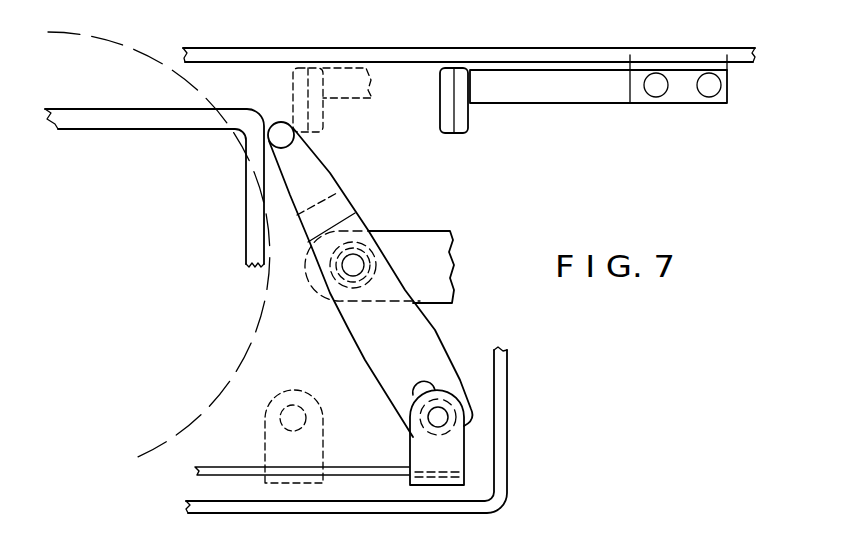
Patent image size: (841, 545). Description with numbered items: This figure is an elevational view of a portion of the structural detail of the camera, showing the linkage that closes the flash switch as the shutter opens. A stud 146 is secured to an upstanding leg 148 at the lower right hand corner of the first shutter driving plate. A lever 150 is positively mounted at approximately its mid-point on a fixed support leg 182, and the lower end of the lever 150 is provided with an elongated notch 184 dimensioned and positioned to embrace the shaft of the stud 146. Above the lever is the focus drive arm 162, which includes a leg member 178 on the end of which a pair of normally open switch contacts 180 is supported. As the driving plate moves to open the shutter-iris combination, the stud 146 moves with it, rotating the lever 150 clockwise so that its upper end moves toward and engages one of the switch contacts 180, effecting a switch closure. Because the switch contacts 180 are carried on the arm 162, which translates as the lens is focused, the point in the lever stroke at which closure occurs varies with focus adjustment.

The focus drive arm 162 is at (668, 53).
The switch contacts 180 is at (473, 69).
The leg member 178 is at (675, 104).
The lever 150 is at (438, 342).
The fixed support leg 182 is at (423, 229).
The upstanding leg 148 is at (409, 459).
The stud 146 is at (412, 439).
The elongated notch 184 is at (413, 388).